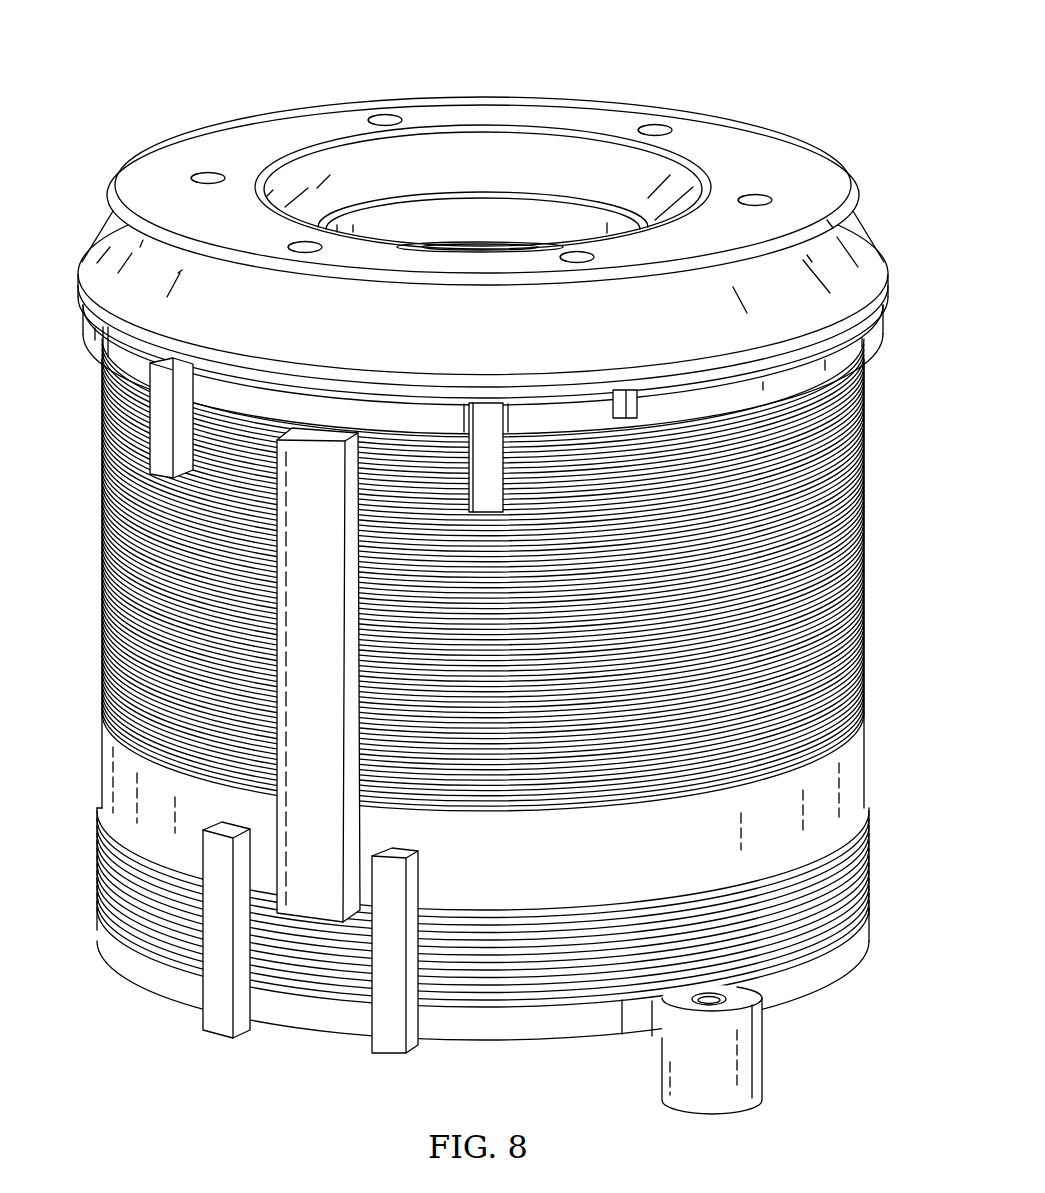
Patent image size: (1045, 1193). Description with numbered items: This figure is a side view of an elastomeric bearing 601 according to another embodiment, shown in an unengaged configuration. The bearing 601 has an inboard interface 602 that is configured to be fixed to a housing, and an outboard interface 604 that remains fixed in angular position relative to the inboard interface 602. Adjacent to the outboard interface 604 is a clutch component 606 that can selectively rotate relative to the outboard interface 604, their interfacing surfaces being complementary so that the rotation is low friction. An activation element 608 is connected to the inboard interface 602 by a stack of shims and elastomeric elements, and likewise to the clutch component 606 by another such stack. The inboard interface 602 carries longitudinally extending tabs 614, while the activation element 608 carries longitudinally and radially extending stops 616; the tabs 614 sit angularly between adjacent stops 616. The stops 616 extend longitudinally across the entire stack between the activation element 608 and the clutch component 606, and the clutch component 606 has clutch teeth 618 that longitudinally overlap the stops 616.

The bearing 601 is at (178, 66).
The inboard interface 602 is at (533, 1025).
The outboard interface 604 is at (752, 150).
The clutch component 606 is at (870, 340).
The activation element 608 is at (112, 770).
The tabs 614 is at (383, 1022).
The stops 616 is at (290, 808).
The clutch teeth 618 is at (487, 427).